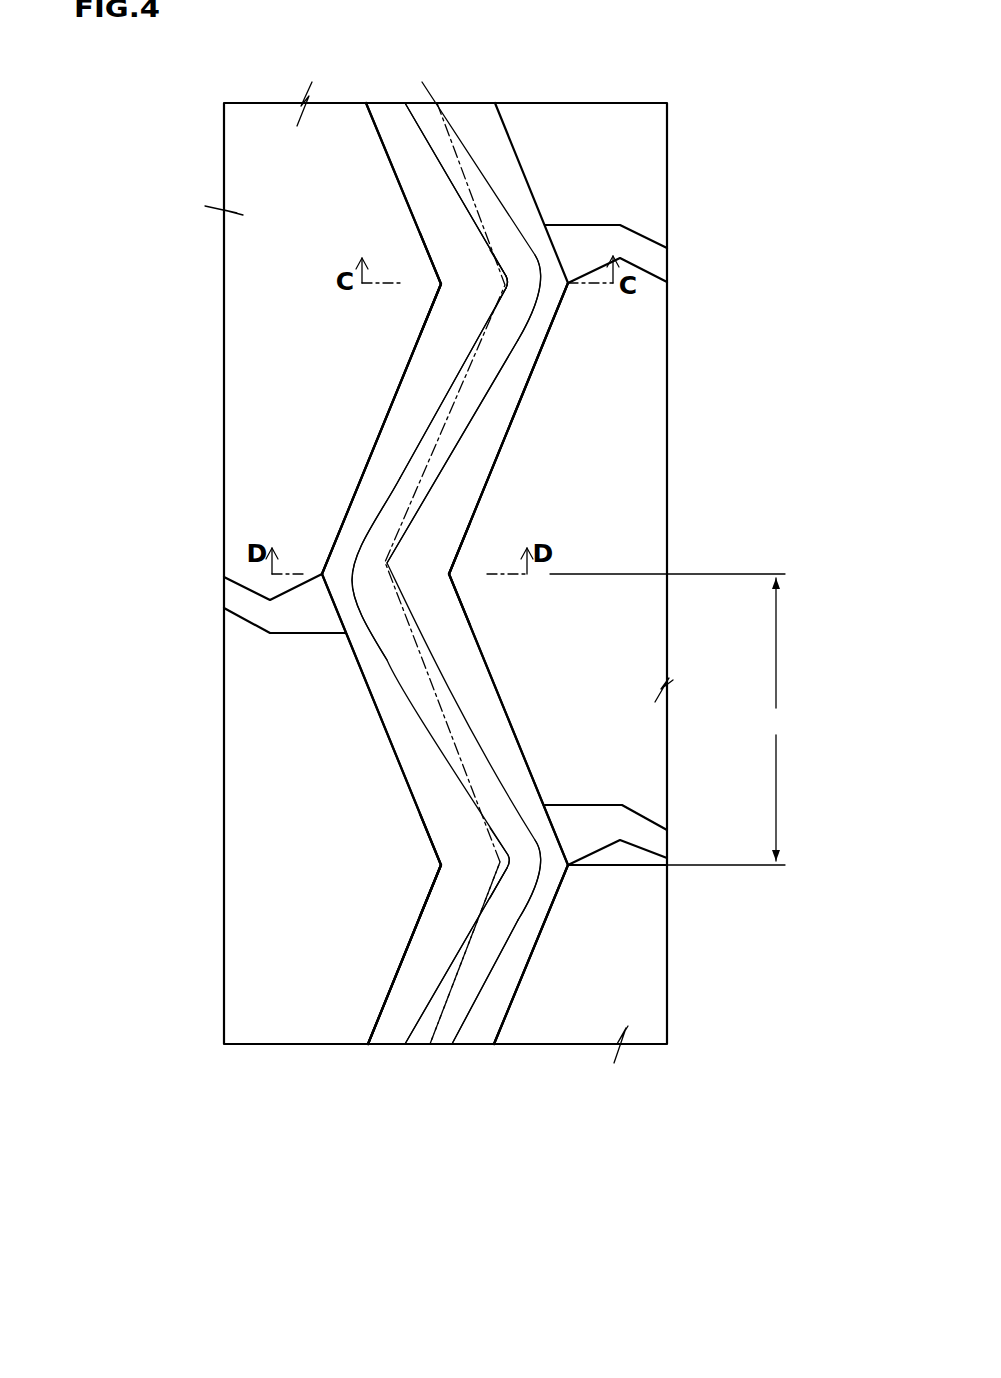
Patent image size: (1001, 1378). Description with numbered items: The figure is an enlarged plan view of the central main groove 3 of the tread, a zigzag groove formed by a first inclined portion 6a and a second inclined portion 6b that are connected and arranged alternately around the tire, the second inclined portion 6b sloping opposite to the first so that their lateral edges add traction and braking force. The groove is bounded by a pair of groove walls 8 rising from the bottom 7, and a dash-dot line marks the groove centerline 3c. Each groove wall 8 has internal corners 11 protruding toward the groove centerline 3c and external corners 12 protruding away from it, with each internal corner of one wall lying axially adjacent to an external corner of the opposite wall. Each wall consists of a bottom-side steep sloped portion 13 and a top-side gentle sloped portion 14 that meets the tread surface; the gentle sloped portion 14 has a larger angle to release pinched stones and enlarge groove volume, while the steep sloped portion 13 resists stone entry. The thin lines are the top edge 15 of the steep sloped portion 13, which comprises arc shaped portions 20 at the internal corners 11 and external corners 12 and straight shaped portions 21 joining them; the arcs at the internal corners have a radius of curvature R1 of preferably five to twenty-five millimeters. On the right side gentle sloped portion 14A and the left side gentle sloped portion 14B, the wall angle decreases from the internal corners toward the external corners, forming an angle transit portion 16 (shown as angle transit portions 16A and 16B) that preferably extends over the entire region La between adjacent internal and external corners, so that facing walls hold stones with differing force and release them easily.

The central main groove 3 is at (483, 134).
The groove centerline 3c is at (430, 112).
The first inclined portion 6a is at (413, 407).
The second inclined portion 6b is at (413, 748).
The bottom 7 is at (441, 1034).
The groove walls 8 is at (330, 1171).
The internal corners 11 is at (458, 277).
The external corners 12 is at (560, 284).
The steep sloped portion 13 is at (423, 1030).
The gentle sloped portion 14 is at (497, 479).
The right side gentle sloped portion 14A is at (507, 978).
The left side gentle sloped portion 14B is at (403, 1008).
The top edge 15 is at (477, 965).
The angle transit portion 16 is at (508, 760).
The angle transit portion 16A is at (490, 435).
The angle transit portion 16B is at (447, 358).
The arc shaped portions 20 is at (503, 300).
The straight shaped portions 21 is at (397, 480).
The radius of curvature R1 is at (505, 284).
The region La is at (669, 719).